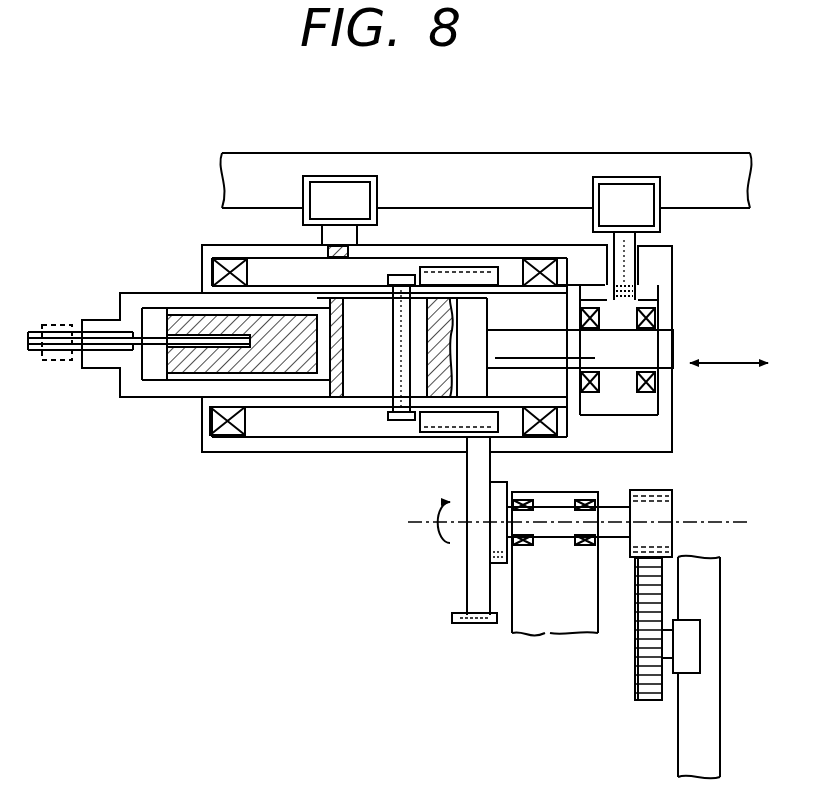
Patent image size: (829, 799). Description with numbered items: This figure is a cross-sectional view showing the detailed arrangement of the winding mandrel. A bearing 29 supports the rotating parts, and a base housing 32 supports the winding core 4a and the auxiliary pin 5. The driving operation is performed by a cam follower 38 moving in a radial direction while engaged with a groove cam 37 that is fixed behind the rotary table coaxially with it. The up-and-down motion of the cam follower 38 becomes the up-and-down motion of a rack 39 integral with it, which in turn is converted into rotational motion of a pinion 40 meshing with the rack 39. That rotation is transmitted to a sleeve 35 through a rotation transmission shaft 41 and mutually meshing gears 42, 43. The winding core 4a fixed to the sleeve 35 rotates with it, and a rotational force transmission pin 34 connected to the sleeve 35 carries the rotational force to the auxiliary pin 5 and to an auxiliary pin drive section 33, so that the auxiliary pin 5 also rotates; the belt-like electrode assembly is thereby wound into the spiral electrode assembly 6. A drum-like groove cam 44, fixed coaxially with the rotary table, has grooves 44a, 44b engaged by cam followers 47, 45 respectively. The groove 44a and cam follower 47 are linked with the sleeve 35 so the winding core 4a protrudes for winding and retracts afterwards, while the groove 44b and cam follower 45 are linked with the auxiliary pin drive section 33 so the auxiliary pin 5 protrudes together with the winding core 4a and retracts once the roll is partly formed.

The winding core 4a is at (60, 363).
The auxiliary pin 5 is at (153, 312).
The spiral electrode assembly 6 is at (57, 325).
The bearing 29 is at (543, 258).
The base housing 32 is at (138, 393).
The auxiliary pin drive section 33 is at (668, 340).
The rotational force transmission pin 34 is at (392, 368).
The sleeve 35 is at (308, 403).
The groove cam 37 is at (688, 618).
The cam follower 38 is at (697, 657).
The rack 39 is at (639, 657).
The pinion 40 is at (666, 513).
The rotation transmission shaft 41 is at (548, 540).
The gear 42 is at (465, 595).
The gear 43 is at (423, 433).
The drum-like groove cam 44 is at (711, 174).
The groove 44a is at (377, 184).
The groove 44b is at (603, 182).
The cam follower 45 is at (653, 217).
The cam follower 47 is at (318, 188).